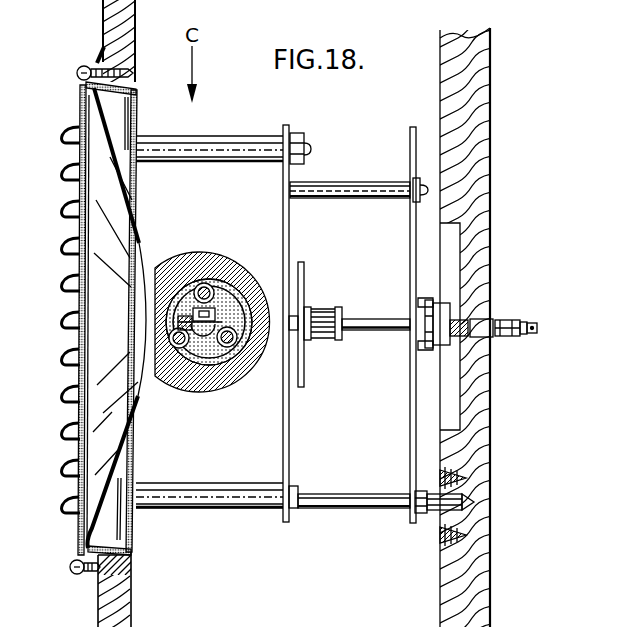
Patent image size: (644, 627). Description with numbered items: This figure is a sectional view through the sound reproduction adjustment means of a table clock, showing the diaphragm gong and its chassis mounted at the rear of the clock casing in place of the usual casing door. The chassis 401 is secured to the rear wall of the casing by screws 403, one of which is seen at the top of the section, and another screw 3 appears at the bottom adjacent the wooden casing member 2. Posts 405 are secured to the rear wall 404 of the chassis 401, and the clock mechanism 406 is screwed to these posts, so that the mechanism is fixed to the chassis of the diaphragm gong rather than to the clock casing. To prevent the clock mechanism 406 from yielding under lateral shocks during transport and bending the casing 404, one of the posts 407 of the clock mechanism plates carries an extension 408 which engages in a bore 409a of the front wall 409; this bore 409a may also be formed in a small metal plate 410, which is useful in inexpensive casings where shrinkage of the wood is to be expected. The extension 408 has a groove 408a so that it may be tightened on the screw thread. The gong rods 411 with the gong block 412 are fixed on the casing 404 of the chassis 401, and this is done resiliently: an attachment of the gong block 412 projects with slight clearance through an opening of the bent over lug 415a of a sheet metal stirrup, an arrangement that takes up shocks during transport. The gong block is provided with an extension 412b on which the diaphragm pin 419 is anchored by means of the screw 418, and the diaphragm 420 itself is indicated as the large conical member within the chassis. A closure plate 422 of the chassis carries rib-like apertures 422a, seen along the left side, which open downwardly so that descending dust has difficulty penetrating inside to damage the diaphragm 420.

The wooden post 2 is at (112, 602).
The screw 3 is at (75, 568).
The chassis 401 is at (78, 102).
The screws 403 is at (78, 70).
The rear wall of the chassis 404 is at (137, 127).
The posts 405 is at (244, 128).
The clock mechanism 406 is at (410, 262).
The posts of the clock mechanism plates 407 is at (333, 190).
The extension 408 is at (440, 505).
The groove 408a is at (422, 490).
The front wall 409 is at (465, 552).
The bore 409a is at (473, 505).
The small metal plate 410 is at (463, 482).
The gong rods 411 is at (205, 283).
The gong block 412 is at (214, 334).
The extension of the gong block 412b is at (238, 362).
The bent over lug 415a is at (198, 384).
The screw 418 is at (228, 285).
The diaphragm pin 419 is at (181, 272).
The diaphragm 420 is at (138, 228).
The closure plate 422 is at (79, 148).
The rib-like apertures 422a is at (79, 176).